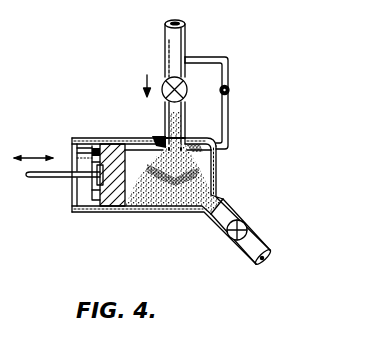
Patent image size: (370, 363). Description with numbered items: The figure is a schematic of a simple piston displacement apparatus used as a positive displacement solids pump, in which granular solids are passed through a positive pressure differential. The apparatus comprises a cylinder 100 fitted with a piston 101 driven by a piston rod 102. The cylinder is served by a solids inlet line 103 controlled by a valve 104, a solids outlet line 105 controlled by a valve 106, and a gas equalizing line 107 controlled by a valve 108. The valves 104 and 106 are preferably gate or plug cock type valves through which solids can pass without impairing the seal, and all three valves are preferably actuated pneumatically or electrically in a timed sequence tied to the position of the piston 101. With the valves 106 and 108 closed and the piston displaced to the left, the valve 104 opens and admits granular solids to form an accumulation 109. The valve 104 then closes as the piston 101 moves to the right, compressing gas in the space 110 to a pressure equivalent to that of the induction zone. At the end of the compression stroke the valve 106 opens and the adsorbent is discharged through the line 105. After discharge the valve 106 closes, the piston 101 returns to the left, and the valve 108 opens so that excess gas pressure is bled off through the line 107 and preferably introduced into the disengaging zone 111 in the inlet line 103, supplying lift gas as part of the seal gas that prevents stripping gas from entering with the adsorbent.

The cylinder 100 is at (97, 138).
The piston 101 is at (113, 198).
The piston rod 102 is at (40, 178).
The solids inlet line 103 is at (185, 62).
The valve 104 is at (184, 82).
The solids outlet line 105 is at (250, 245).
The valve 106 is at (240, 222).
The gas equalizing line 107 is at (228, 133).
The valve 108 is at (232, 93).
The accumulation 109 is at (170, 197).
The space 110 is at (156, 139).
The disengaging zone 111 is at (165, 47).